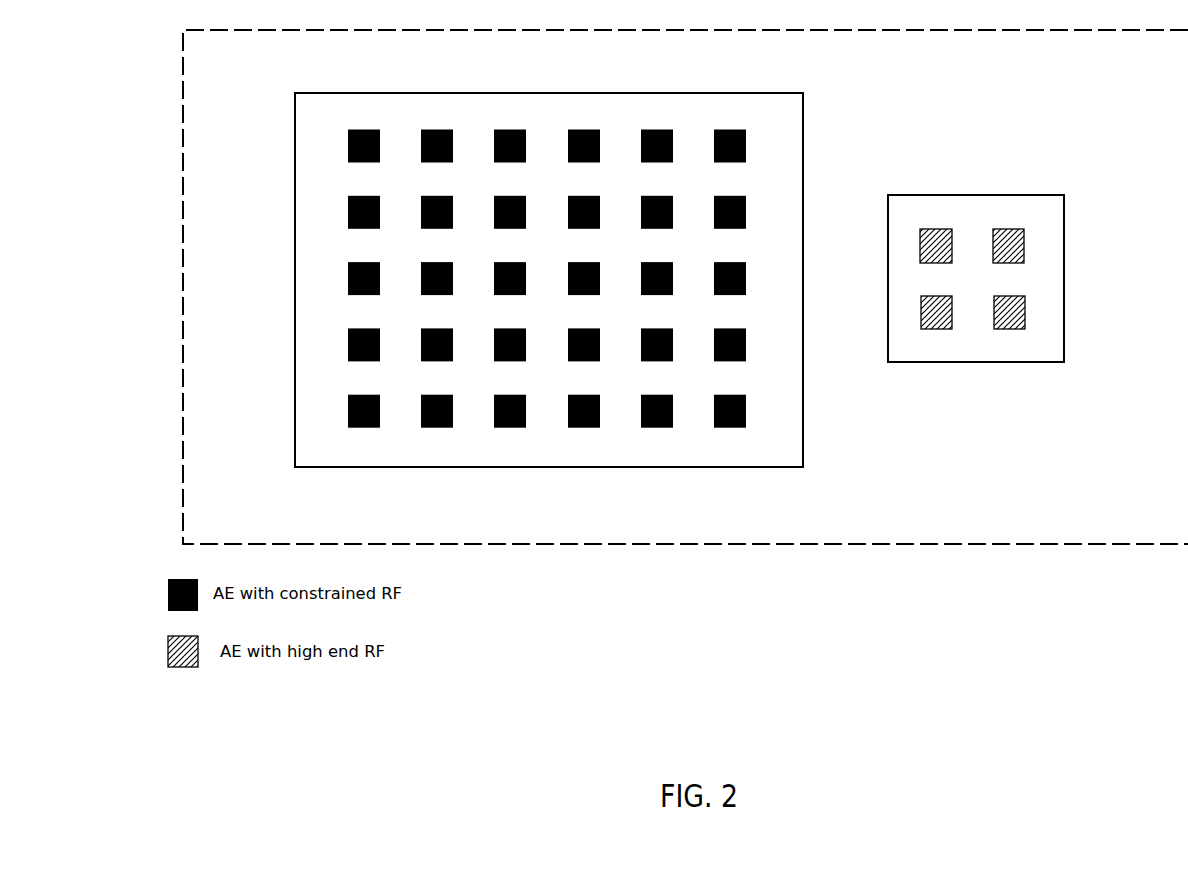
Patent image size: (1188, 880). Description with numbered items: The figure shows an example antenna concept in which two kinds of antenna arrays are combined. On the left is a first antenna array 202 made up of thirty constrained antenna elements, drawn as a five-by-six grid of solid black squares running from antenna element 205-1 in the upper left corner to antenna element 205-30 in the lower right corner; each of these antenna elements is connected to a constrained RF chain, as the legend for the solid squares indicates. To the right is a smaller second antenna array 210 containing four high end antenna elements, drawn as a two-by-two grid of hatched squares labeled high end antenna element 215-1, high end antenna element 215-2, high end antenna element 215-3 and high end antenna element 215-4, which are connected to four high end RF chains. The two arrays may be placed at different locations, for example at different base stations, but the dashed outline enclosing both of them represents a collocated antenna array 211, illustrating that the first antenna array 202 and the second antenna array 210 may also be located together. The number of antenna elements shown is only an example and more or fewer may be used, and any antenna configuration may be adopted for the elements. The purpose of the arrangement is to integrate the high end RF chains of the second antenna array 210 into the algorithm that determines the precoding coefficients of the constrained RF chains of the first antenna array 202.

The first antenna array 202 is at (497, 96).
The antenna element 205-1 is at (347, 146).
The antenna element 205-30 is at (732, 426).
The second antenna array 210 is at (977, 193).
The antenna array 211 is at (903, 544).
The high end antenna element 215-1 is at (919, 245).
The high end antenna element 215-2 is at (1024, 245).
The high end antenna element 215-3 is at (922, 312).
The high end antenna element 215-4 is at (1025, 312).